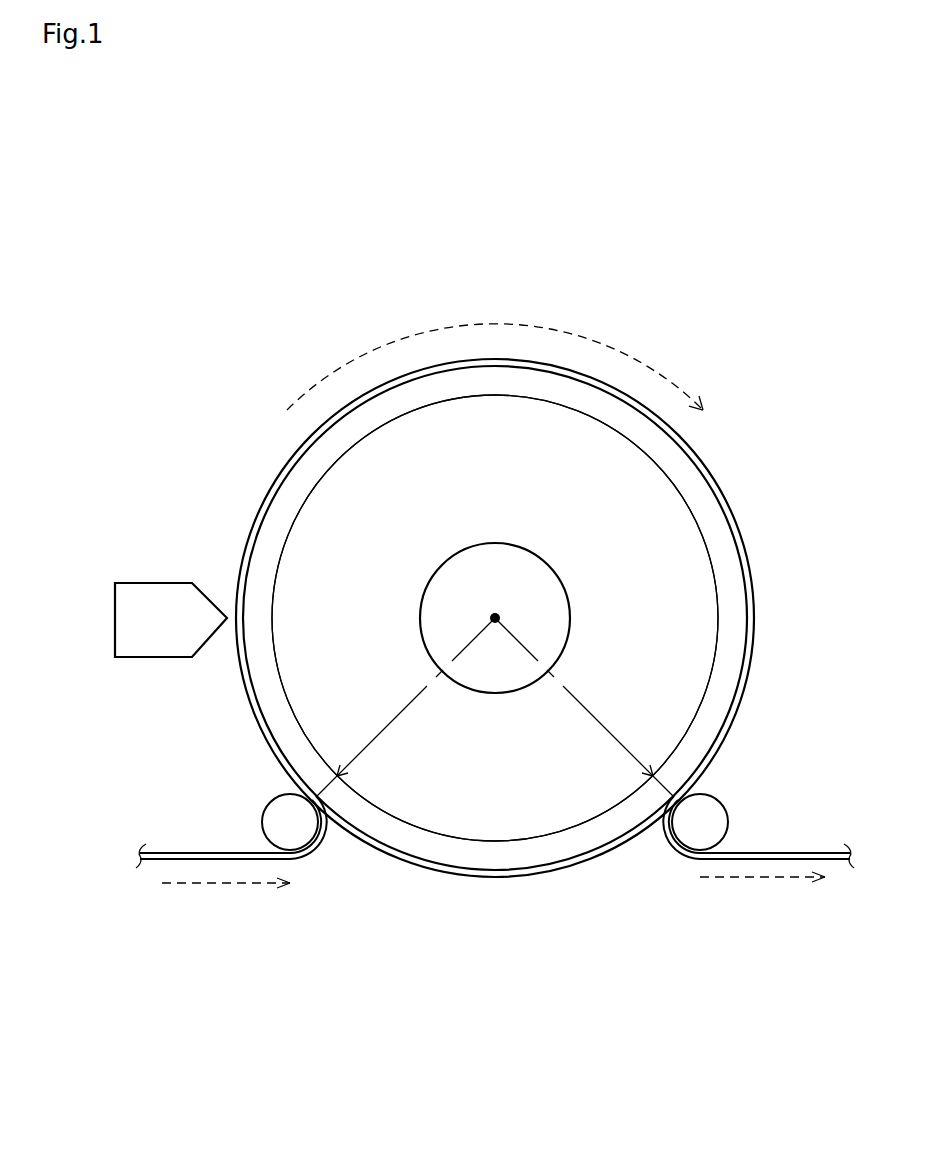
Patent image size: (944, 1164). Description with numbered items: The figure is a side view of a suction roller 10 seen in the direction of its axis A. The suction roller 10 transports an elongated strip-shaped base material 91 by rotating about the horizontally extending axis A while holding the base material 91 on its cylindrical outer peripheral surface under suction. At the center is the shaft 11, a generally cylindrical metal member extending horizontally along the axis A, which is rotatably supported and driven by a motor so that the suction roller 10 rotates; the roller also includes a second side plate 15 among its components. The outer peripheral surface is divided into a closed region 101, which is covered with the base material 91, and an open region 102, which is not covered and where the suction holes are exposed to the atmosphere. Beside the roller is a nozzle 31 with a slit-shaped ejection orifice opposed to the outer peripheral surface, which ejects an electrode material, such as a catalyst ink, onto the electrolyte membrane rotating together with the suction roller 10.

The suction roller 10 is at (497, 897).
The shaft 11 is at (470, 588).
The second side plate 15 is at (670, 609).
The closed region 101 is at (495, 506).
The open region 102 is at (495, 729).
The nozzle 31 is at (153, 600).
The base material 91 is at (207, 852).
The axis A is at (500, 608).